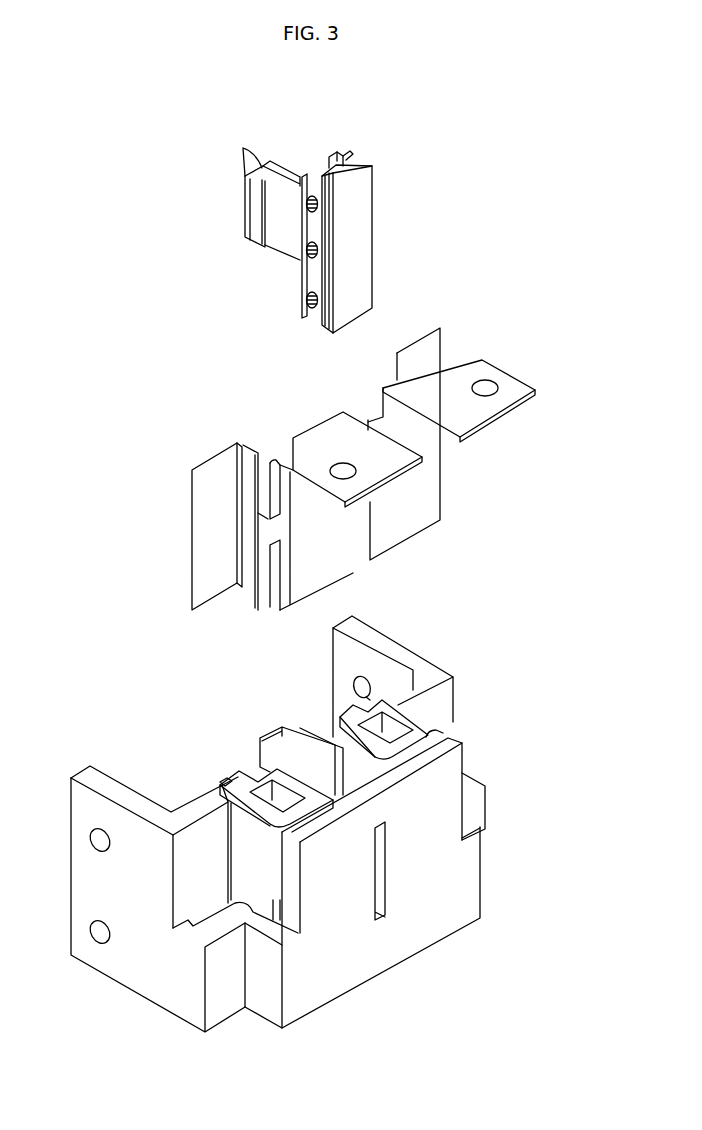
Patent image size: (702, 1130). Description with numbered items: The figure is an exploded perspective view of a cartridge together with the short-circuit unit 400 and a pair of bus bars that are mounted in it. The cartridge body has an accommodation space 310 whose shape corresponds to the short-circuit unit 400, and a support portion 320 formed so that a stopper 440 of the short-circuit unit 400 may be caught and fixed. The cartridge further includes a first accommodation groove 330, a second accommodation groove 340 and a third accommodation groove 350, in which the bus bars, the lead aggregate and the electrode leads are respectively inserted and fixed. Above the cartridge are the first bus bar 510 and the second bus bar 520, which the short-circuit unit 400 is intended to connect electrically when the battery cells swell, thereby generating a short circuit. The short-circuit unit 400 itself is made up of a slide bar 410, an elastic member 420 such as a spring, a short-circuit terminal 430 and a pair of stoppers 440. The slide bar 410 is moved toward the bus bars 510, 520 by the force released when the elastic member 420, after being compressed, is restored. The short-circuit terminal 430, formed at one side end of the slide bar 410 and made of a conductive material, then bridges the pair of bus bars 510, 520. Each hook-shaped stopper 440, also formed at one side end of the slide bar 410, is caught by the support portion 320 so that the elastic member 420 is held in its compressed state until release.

The short-circuit unit 400 is at (291, 135).
The slide bar 410 is at (341, 168).
The elastic member 420 is at (306, 258).
The short-circuit terminal 430 is at (363, 200).
The stopper 440 is at (243, 150).
The first bus bar 510 is at (465, 415).
The second bus bar 520 is at (382, 465).
The accommodation space 310 is at (350, 773).
The support portion 320 is at (262, 738).
The first accommodation groove 330 is at (447, 735).
The second accommodation groove 340 is at (273, 767).
The third accommodation groove 350 is at (223, 784).